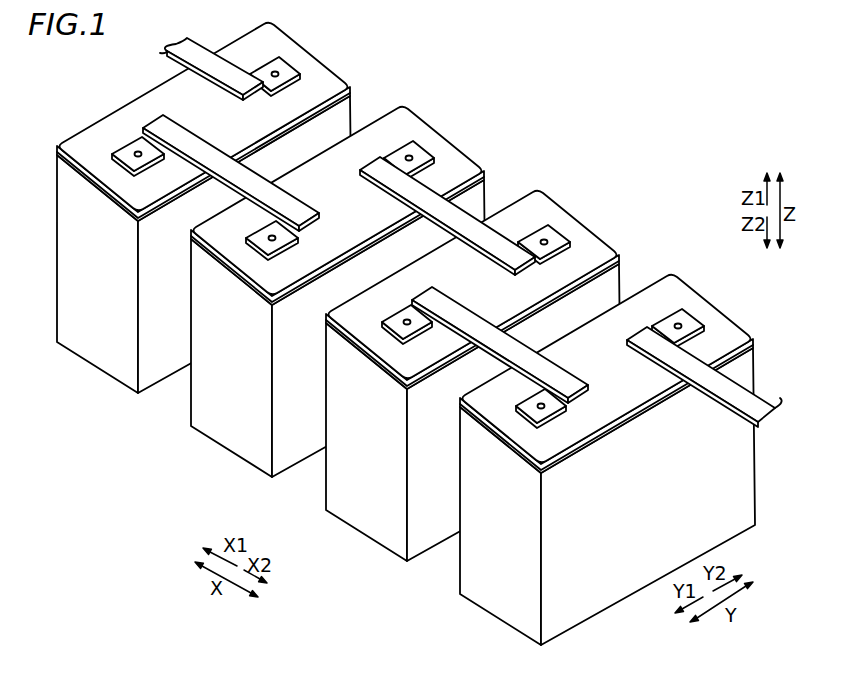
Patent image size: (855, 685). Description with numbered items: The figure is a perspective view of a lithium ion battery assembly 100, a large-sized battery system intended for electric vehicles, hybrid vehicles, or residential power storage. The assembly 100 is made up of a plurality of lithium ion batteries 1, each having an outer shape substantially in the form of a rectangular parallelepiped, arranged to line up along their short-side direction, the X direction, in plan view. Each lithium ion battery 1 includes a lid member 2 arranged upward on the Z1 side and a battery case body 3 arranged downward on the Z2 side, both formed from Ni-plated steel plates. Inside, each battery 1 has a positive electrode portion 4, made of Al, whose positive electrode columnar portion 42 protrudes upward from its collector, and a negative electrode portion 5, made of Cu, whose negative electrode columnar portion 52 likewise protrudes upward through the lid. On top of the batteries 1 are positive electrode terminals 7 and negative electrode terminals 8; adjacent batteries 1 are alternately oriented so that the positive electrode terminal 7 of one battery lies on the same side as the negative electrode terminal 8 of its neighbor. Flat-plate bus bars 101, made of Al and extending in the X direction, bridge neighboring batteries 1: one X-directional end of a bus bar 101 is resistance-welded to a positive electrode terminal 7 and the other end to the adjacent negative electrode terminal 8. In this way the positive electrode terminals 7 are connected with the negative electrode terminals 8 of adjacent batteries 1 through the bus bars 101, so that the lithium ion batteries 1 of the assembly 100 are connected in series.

The lithium ion battery assembly 100 is at (415, 333).
The bus bar 101 is at (473, 284).
The lithium ion battery 1 is at (391, 338).
The lid member 2 is at (396, 316).
The battery case body 3 is at (391, 370).
The positive electrode portion 4 is at (372, 309).
The positive electrode columnar portion 42 is at (372, 309).
The negative electrode portion 5 is at (421, 284).
The negative electrode columnar portion 52 is at (421, 284).
The positive electrode terminal 7 is at (430, 273).
The negative electrode terminal 8 is at (406, 308).